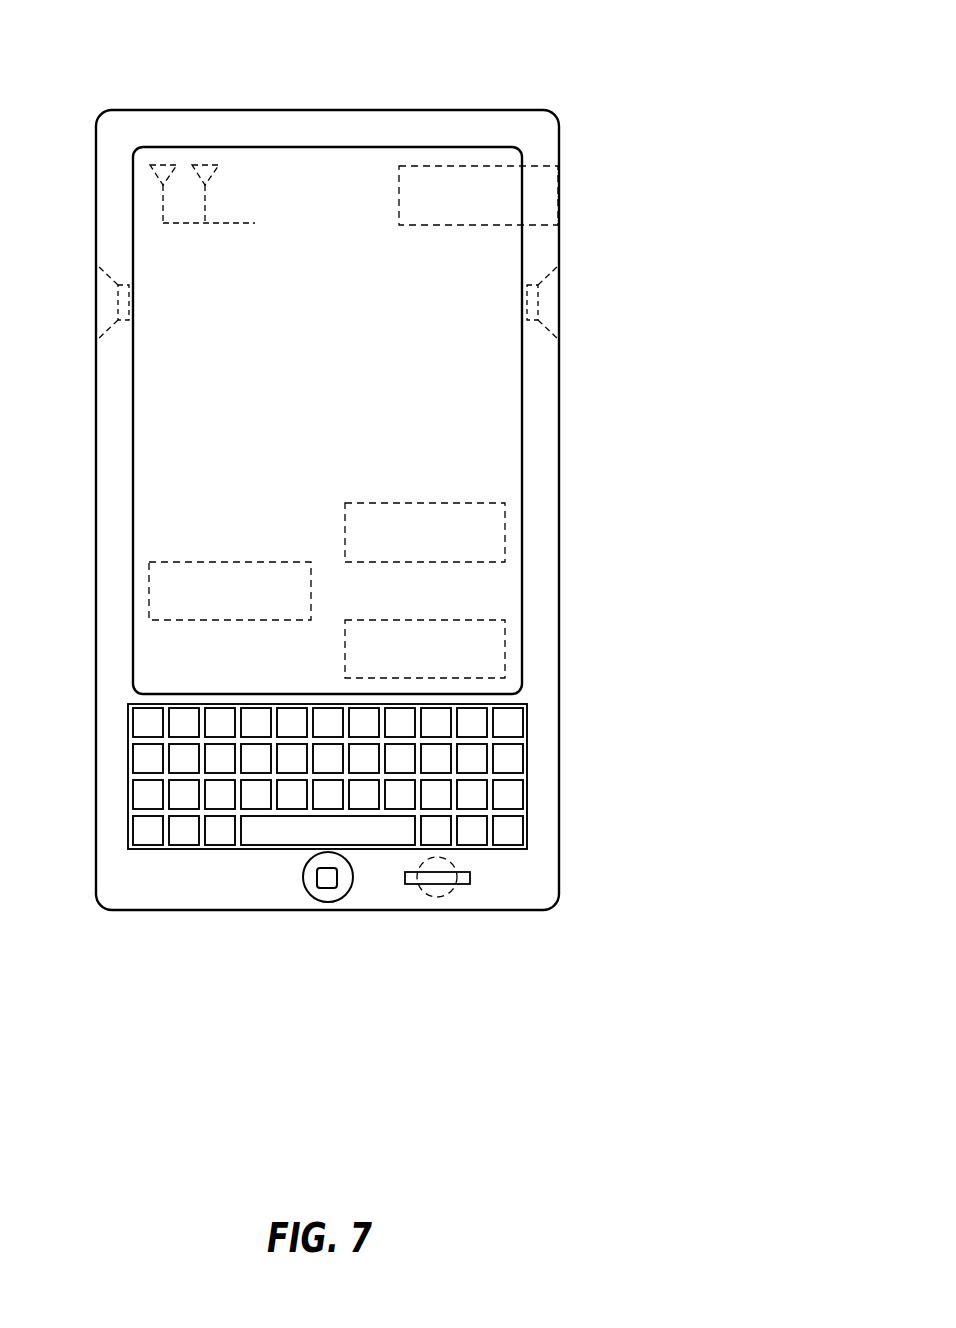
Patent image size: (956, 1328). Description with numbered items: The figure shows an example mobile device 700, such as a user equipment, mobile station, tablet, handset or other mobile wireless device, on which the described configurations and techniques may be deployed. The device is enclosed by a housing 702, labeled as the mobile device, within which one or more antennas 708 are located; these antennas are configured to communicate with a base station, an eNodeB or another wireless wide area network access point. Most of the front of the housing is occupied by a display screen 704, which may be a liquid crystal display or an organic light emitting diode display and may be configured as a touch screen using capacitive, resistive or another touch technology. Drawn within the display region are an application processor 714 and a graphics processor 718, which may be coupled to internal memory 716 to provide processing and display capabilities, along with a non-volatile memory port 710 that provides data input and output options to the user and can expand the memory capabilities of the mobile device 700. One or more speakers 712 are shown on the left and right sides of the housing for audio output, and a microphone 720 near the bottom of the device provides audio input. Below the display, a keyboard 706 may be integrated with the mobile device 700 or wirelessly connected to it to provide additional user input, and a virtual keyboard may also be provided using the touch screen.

The mobile device 700 is at (548, 43).
The housing 702 is at (328, 110).
The display screen 704 is at (502, 410).
The keyboard 706 is at (528, 775).
The antennas 708 is at (205, 163).
The non-volatile memory port 710 is at (559, 193).
The speakers 712 is at (105, 304).
The application processor 714 is at (427, 503).
The internal memory 716 is at (427, 620).
The graphics processor 718 is at (230, 562).
The microphone 720 is at (440, 898).